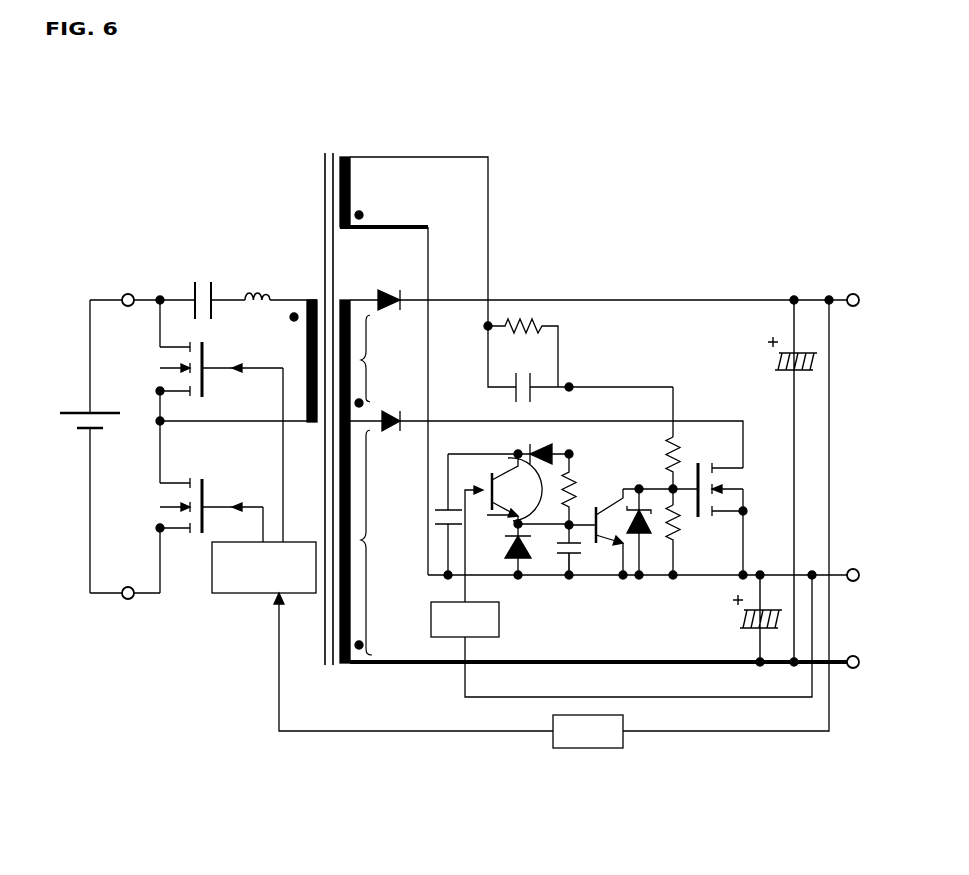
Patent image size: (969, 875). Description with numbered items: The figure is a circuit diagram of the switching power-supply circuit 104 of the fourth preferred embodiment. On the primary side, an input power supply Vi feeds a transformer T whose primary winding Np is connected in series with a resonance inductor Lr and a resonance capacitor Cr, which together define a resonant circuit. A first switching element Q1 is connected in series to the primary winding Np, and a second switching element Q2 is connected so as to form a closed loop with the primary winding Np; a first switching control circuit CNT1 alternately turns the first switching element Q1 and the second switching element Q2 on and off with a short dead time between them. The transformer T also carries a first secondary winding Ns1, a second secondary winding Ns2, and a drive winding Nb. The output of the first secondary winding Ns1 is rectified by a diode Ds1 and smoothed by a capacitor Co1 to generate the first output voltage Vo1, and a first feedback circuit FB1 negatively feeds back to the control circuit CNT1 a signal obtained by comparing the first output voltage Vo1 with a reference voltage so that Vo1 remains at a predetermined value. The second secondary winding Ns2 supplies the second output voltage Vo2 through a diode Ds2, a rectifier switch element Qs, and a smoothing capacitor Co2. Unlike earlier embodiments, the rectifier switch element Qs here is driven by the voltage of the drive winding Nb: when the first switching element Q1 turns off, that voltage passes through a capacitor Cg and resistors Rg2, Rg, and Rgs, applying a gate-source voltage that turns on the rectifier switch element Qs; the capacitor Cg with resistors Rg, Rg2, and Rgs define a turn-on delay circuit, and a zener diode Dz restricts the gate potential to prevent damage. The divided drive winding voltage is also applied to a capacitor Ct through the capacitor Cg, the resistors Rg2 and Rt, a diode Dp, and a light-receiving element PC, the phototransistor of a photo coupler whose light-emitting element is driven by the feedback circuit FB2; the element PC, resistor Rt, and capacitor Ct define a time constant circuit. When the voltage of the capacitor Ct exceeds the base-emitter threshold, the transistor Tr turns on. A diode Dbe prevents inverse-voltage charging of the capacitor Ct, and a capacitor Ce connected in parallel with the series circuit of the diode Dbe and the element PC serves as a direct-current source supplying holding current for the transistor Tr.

The switching power-supply circuit 104 is at (791, 155).
The input power supply Vi is at (75, 421).
The resonance capacitor Cr is at (203, 287).
The resonance inductor Lr is at (257, 280).
The primary winding Np is at (296, 361).
The first switching element Q1 is at (195, 510).
The second switching element Q2 is at (205, 442).
The first switching control circuit CNT1 is at (264, 567).
The transformer T is at (328, 146).
The drive winding Nb is at (414, 366).
The first secondary winding Ns1 is at (384, 361).
The second secondary winding Ns2 is at (384, 542).
The diode Ds1 is at (598, 286).
The diode Ds2 is at (546, 439).
The resistor Rg2 is at (527, 312).
The capacitor Cg is at (580, 364).
The resistor Rg is at (657, 471).
The resistor Rgs is at (691, 540).
The rectifier switch element Qs is at (720, 505).
The diode Dp is at (560, 450).
The resistor Rt is at (583, 498).
The capacitor Ct is at (562, 563).
The transistor Tr is at (606, 546).
The zener diode Dz is at (652, 538).
The capacitor Ce is at (440, 540).
The light-receiving element PC is at (510, 465).
The diode Dbe is at (498, 549).
The feedback circuit FB2 is at (621, 636).
The first feedback circuit FB1 is at (551, 524).
The capacitor Co1 is at (773, 481).
The capacitor Co2 is at (738, 618).
The first output voltage Vo1 is at (856, 277).
The second output voltage Vo2 is at (854, 552).